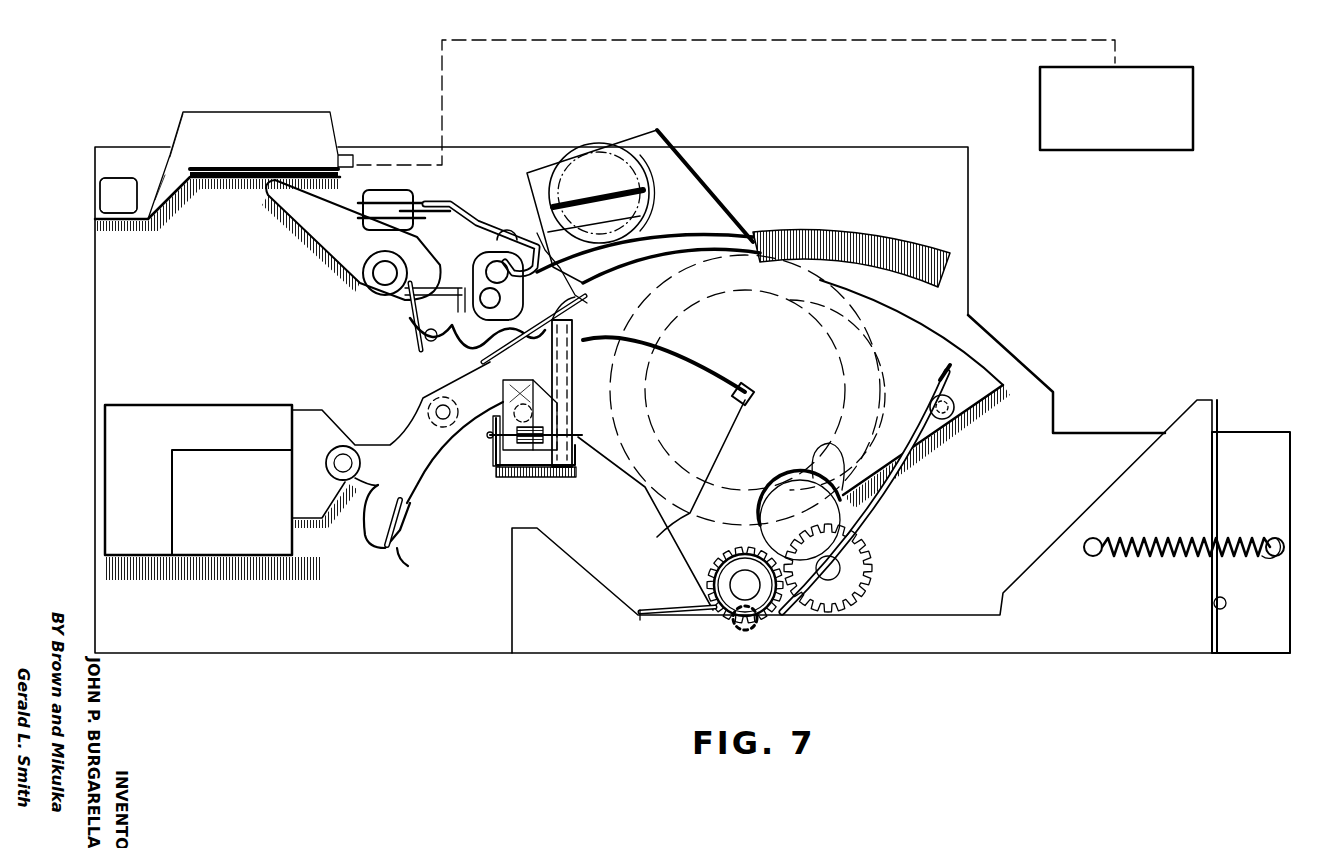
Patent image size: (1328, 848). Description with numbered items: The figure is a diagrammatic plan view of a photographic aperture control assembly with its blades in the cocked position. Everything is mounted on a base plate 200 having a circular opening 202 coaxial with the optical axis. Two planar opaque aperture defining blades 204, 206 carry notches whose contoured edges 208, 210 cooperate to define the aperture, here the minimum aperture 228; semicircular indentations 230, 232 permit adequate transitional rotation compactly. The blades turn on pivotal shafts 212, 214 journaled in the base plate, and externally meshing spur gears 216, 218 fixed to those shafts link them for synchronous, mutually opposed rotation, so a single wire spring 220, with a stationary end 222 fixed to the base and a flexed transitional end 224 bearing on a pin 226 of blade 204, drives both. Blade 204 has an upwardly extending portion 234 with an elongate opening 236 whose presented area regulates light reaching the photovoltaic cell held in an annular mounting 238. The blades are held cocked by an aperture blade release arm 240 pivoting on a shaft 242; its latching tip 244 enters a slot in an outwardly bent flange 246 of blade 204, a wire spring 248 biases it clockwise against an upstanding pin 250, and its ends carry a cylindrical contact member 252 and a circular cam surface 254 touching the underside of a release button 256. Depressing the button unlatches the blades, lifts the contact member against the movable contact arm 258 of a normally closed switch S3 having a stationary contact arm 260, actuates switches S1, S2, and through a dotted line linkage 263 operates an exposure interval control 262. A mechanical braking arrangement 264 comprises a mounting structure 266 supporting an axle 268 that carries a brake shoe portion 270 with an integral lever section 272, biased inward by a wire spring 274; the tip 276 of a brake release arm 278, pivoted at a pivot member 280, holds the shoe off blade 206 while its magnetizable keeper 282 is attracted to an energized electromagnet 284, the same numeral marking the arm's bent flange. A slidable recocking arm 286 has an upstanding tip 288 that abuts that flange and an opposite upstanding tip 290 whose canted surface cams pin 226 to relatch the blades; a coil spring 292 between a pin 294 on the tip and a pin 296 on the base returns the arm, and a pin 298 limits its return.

The base plate 200 is at (955, 162).
The circular opening 202 is at (765, 390).
The aperture defining blade 204 is at (930, 333).
The aperture defining blade 206 is at (660, 480).
The notch contoured edge 208 is at (735, 390).
The notch contoured edge 210 is at (770, 393).
The pivotal shaft 212 is at (718, 612).
The pivotal shaft 214 is at (838, 566).
The spur gear 216 is at (748, 600).
The spur gear 218 is at (812, 618).
The wire spring 220 is at (890, 488).
The stationary end 222 is at (652, 610).
The flexed transitional end 224 is at (944, 375).
The pin 226 is at (954, 412).
The minimum aperture 228 is at (742, 388).
The semicircular indentation 230 is at (815, 462).
The semicircular indentation 232 is at (786, 500).
The upwardly extending portion 234 is at (655, 140).
The elongate opening 236 is at (555, 185).
The annular mounting 238 is at (584, 148).
The aperture blade release arm 240 is at (322, 230).
The pivotal shaft 242 is at (375, 278).
The latching tip 244 is at (562, 312).
The outwardly bent flange 246 is at (492, 355).
The wire spring 248 is at (408, 318).
The upstanding pin 250 is at (424, 343).
The cylindrical contact member 252 is at (478, 280).
The circular cam surface 254 is at (275, 190).
The release button 256 is at (236, 122).
The movable contact arm 258 is at (452, 204).
The stationary contact arm 260 is at (450, 226).
The exposure interval control function 262 is at (1158, 70).
The dotted line linkage 263 is at (905, 42).
The mechanical braking arrangement 264 is at (486, 474).
The mounting structure 266 is at (545, 468).
The axle 268 is at (495, 438).
The brake shoe portion 270 is at (555, 415).
The lever section 272 is at (550, 390).
The wire spring 274 is at (520, 470).
The tip 276 is at (566, 390).
The brake release arm 278 is at (412, 550).
The pivot member 280 is at (437, 410).
The magnetizable keeper 282 is at (310, 410).
The electromagnet 284 is at (155, 405).
The recocking arm 286 is at (973, 648).
The upstanding tip 288 is at (560, 558).
The upstanding tip 290 is at (1180, 420).
The coil spring 292 is at (1220, 545).
The pin 294 is at (1103, 540).
The pin 296 is at (1270, 556).
The pin 298 is at (1226, 606).
The switch S1 is at (100, 190).
The switch S2 is at (118, 195).
The switch S3 is at (388, 192).